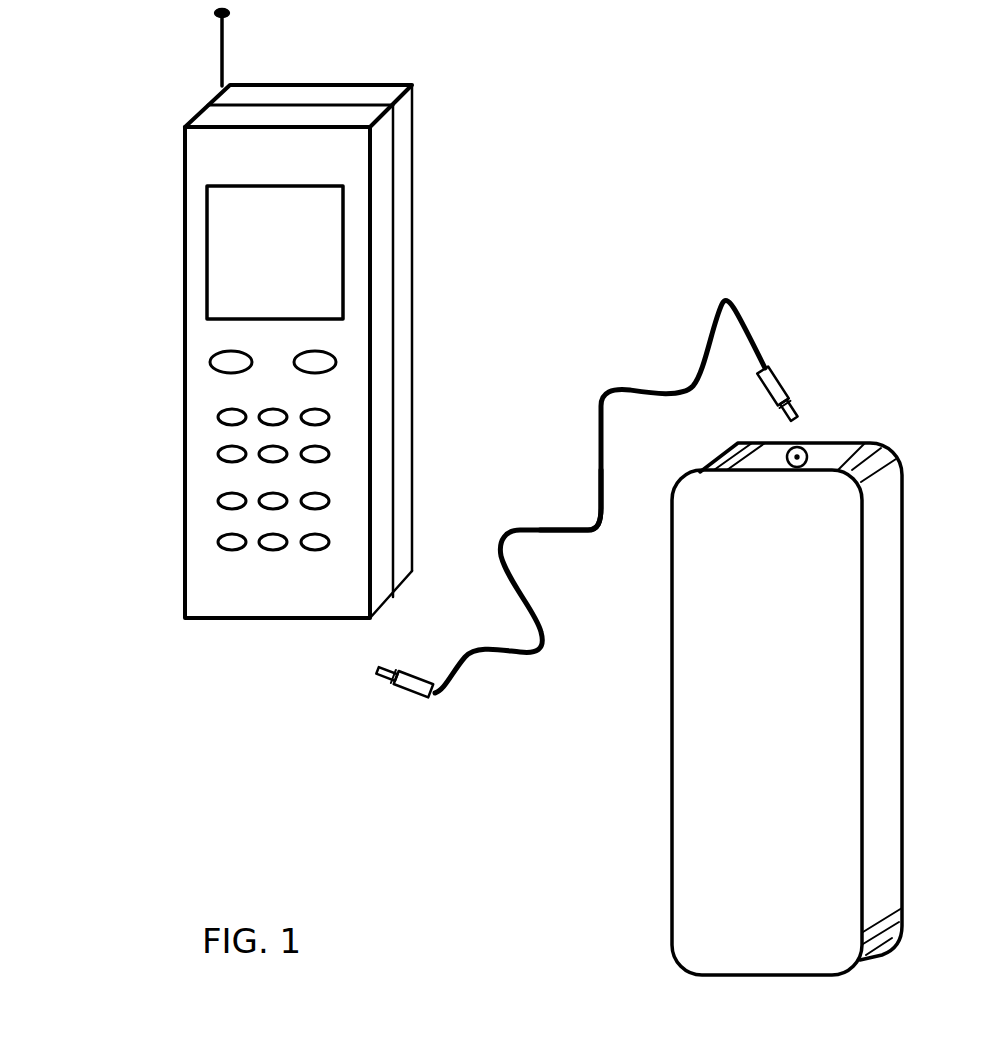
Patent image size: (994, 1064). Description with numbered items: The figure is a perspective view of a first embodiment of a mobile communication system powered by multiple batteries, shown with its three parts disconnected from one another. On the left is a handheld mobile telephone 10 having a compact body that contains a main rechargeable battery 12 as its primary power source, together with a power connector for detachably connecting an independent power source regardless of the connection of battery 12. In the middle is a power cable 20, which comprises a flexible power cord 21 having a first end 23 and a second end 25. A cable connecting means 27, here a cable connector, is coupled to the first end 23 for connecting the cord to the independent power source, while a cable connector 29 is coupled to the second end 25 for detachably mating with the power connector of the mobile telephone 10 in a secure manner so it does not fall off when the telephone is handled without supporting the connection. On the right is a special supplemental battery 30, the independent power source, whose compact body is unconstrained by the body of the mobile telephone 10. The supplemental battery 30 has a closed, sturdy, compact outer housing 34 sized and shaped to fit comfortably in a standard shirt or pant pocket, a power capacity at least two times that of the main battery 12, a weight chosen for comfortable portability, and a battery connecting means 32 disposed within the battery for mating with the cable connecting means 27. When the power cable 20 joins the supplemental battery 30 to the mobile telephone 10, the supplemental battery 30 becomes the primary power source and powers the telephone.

The handheld mobile telephone 10 is at (177, 341).
The main rechargeable battery 12 is at (412, 197).
The power cable 20 is at (589, 468).
The flexible power cord 21 is at (578, 534).
The first end 23 is at (768, 368).
The second end 25 is at (436, 697).
The cable connecting means 27 is at (783, 386).
The cable connector 29 is at (398, 689).
The supplemental battery 30 is at (706, 674).
The battery connecting means 32 is at (797, 446).
The outer housing 34 is at (672, 770).